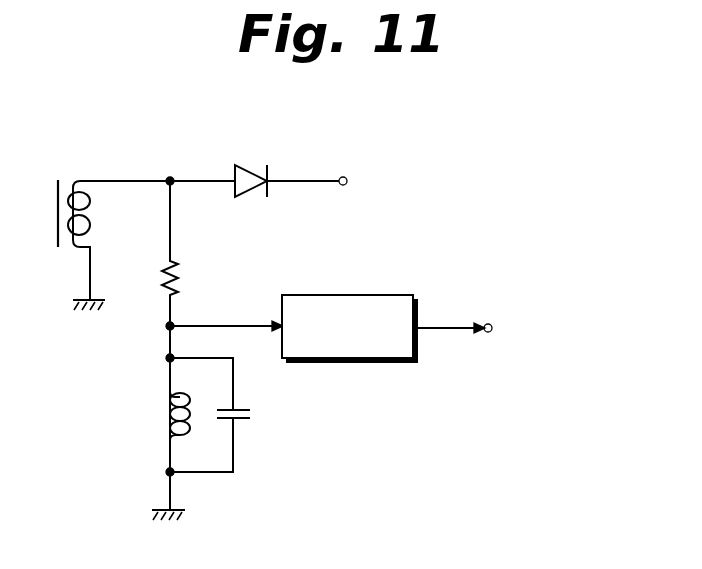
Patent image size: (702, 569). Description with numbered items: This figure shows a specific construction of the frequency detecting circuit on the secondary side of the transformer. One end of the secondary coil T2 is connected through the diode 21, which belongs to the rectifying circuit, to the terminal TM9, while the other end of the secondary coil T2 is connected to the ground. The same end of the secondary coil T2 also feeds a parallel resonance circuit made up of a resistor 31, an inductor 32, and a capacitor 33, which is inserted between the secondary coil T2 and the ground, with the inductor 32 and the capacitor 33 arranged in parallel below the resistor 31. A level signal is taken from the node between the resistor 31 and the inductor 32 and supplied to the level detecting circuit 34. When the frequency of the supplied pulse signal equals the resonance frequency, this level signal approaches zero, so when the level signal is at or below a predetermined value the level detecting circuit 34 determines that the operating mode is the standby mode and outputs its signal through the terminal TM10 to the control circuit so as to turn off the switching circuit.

The diode 21 is at (253, 172).
The resistor 31 is at (185, 277).
The inductor 32 is at (163, 415).
The capacitor 33 is at (250, 413).
The level detecting circuit 34 is at (342, 293).
The secondary coil T2 is at (73, 177).
The terminal TM9 is at (348, 181).
The terminal TM10 is at (493, 328).